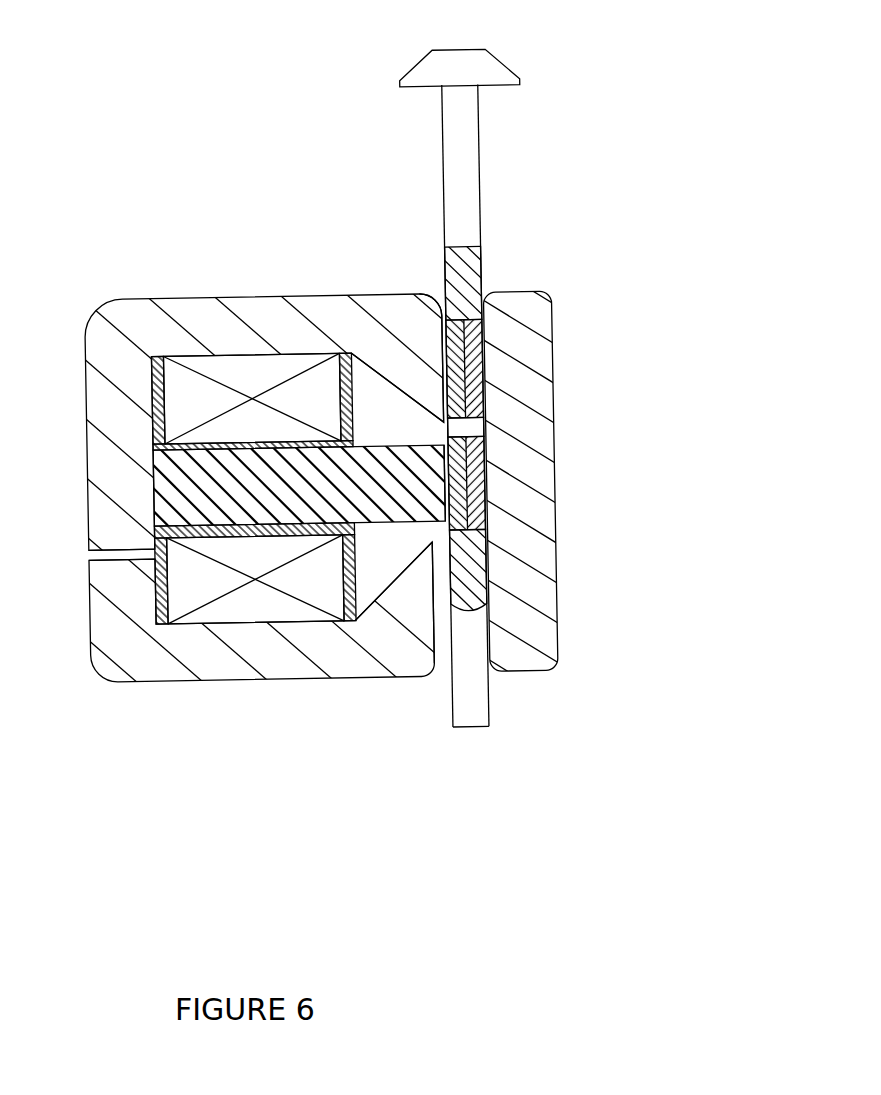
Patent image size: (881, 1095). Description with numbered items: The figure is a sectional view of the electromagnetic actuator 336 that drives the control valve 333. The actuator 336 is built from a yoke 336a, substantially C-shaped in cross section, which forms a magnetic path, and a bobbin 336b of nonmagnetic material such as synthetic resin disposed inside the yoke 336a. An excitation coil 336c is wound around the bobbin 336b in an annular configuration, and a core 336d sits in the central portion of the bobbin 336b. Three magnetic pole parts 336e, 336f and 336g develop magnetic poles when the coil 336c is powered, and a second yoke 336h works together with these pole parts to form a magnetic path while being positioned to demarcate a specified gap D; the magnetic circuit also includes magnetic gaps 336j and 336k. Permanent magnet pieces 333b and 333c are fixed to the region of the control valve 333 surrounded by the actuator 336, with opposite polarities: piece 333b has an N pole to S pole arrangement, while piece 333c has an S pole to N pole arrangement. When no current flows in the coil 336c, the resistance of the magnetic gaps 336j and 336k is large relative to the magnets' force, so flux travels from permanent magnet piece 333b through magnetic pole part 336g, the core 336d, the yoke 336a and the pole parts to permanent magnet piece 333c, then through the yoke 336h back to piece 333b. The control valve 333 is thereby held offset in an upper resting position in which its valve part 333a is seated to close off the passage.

The control valve 333 is at (488, 158).
The valve part 333a is at (493, 64).
The permanent magnet piece 333b is at (487, 478).
The permanent magnet piece 333c is at (487, 356).
The electromagnetic actuator 336 is at (245, 694).
The yoke 336a is at (200, 297).
The bobbin 336b is at (153, 390).
The excitation coil 336c is at (264, 375).
The core 336d is at (198, 487).
The magnetic pole part 336e is at (412, 567).
The magnetic pole part 336f is at (428, 393).
The magnetic pole part 336g is at (430, 482).
The yoke 336h is at (530, 295).
The magnetic gap 336j is at (85, 555).
The magnetic gap 336k is at (442, 588).
The gap D is at (438, 297).